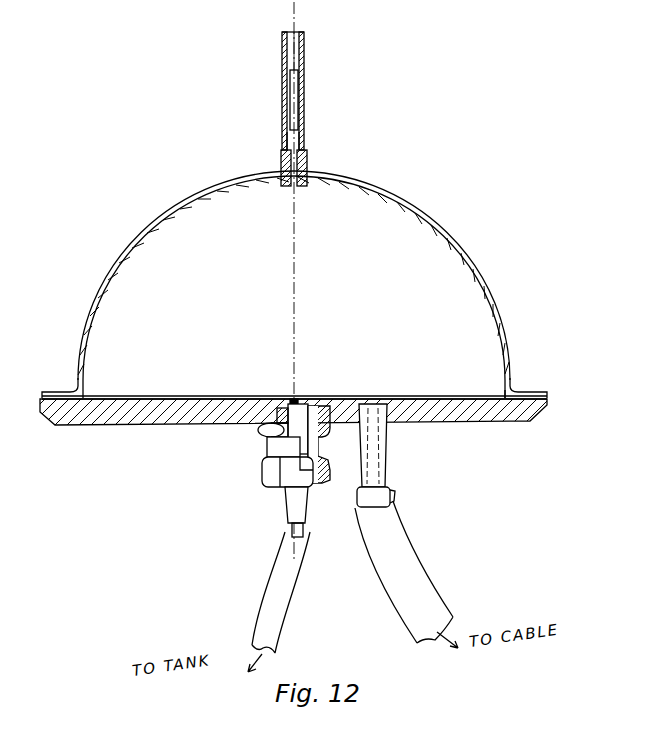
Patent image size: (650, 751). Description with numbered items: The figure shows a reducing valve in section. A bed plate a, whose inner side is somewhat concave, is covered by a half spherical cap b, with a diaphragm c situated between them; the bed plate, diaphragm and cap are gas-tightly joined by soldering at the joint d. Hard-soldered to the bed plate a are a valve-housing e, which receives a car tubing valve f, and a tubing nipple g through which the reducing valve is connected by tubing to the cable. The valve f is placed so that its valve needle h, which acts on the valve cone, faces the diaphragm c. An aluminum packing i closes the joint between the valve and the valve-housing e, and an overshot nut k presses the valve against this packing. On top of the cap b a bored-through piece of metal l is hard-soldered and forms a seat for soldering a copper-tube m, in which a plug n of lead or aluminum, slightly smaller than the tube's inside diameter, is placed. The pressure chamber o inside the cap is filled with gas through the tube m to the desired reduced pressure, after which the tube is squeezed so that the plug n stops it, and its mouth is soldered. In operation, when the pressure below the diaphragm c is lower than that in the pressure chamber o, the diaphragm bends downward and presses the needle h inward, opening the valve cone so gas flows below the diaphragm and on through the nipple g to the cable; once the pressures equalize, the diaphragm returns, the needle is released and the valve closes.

The copper-tube m is at (305, 60).
The plug n is at (295, 100).
The piece of metal l is at (307, 165).
The cap b is at (195, 202).
The pressure chamber o is at (177, 298).
The diaphragm c is at (470, 395).
The joint d is at (548, 400).
The bed plate a is at (82, 428).
The valve needle h is at (297, 405).
The valve-housing e is at (258, 430).
The aluminum packing i is at (265, 475).
The car tubing valve f is at (285, 500).
The overshot nut k is at (318, 483).
The tubing nipple g is at (393, 498).